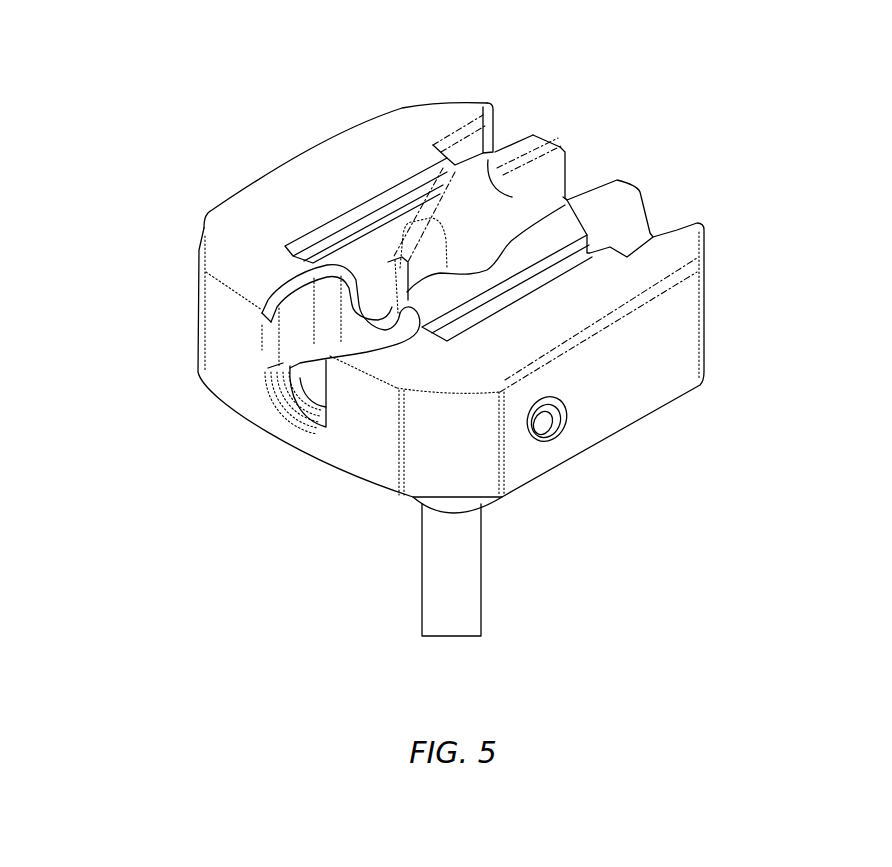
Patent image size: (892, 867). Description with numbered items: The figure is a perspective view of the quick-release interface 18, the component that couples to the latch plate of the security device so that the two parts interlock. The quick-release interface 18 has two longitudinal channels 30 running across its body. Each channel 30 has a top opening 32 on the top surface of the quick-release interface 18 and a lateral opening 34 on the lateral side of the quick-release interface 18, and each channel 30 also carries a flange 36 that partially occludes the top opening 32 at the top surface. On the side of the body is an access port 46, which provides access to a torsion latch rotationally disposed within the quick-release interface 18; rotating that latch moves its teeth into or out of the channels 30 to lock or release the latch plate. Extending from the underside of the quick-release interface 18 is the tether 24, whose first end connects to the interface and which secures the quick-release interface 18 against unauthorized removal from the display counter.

The quick-release interface 18 is at (226, 94).
The tether 24 is at (482, 570).
The longitudinal channel 30 is at (512, 197).
The top opening 32 is at (462, 128).
The lateral opening 34 is at (505, 133).
The flange 36 is at (410, 180).
The access port 46 is at (570, 410).